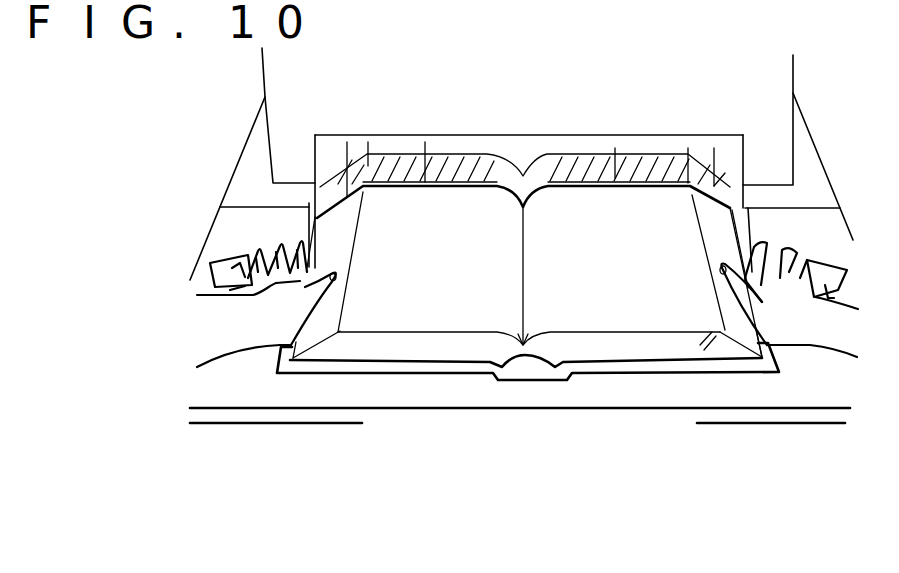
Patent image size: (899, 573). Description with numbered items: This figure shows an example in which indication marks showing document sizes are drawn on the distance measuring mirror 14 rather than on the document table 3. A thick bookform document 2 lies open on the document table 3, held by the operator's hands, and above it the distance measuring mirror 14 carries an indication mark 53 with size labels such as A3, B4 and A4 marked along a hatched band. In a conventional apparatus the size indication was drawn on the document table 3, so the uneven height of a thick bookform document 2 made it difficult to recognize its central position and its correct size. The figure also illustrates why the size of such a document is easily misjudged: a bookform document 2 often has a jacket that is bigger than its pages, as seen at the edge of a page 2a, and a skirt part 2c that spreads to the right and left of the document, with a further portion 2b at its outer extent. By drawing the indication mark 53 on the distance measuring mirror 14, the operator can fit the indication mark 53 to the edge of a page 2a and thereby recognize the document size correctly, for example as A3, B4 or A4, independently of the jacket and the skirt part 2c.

The bookform document 2 is at (405, 315).
The edge of a page 2a is at (717, 333).
The base plate under book 2b is at (772, 374).
The skirt part 2c is at (750, 338).
The document table 3 is at (453, 400).
The distance measuring mirror 14 is at (329, 137).
The indication mark 53 is at (433, 148).
The A3 size mark A3 is at (347, 152).
The B4 size mark B4 is at (381, 136).
The A4 size mark A4 is at (559, 146).